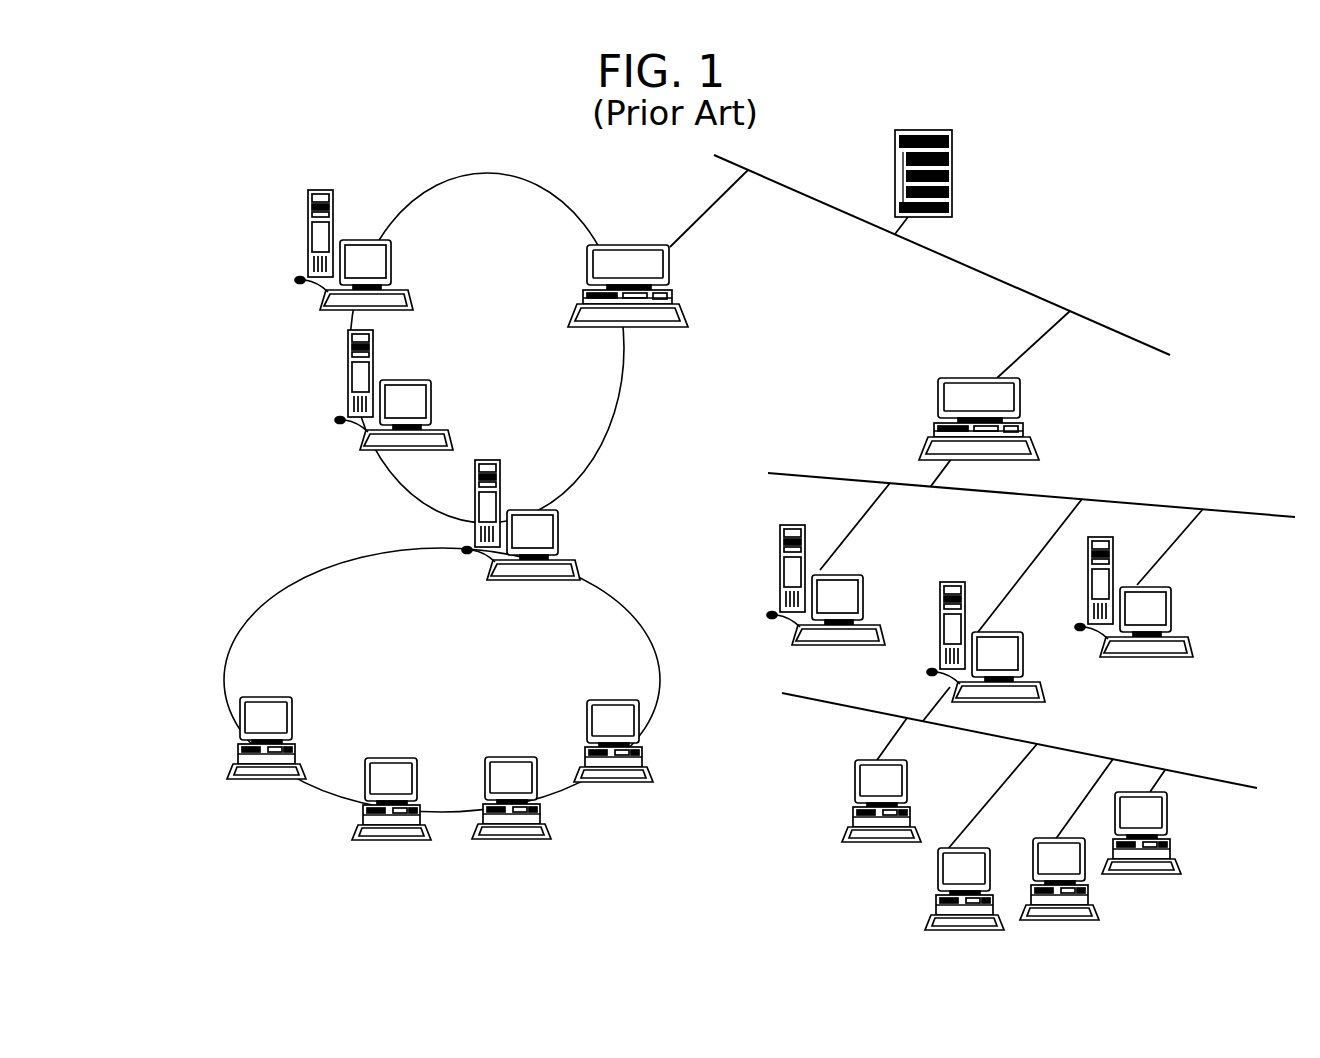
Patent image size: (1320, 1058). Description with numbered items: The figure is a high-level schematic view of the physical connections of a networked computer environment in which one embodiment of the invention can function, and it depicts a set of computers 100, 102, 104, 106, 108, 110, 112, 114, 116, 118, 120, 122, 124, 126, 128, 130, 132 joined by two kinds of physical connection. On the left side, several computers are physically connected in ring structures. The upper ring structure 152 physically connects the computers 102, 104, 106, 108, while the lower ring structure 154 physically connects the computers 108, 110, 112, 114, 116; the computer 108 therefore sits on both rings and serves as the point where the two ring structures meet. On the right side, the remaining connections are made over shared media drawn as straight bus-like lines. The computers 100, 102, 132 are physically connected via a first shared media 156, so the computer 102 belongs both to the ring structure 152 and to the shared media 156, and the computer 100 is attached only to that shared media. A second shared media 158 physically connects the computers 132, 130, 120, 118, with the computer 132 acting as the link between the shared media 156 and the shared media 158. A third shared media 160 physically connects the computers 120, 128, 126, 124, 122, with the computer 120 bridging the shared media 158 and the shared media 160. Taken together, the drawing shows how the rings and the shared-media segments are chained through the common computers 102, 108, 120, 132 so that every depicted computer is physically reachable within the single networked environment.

The computer 100 is at (952, 165).
The computer 102 is at (670, 262).
The computer 104 is at (305, 232).
The computer 106 is at (348, 380).
The computer 108 is at (560, 540).
The computer 110 is at (268, 779).
The computer 112 is at (395, 842).
The computer 114 is at (522, 838).
The computer 116 is at (603, 782).
The computer 118 is at (780, 572).
The computer 120 is at (940, 608).
The computer 122 is at (852, 795).
The computer 124 is at (938, 860).
The computer 126 is at (1082, 878).
The computer 128 is at (1165, 830).
The computer 130 is at (1172, 610).
The computer 132 is at (935, 400).
The ring structure 152 is at (490, 173).
The ring structure 154 is at (358, 557).
The shared media 156 is at (942, 255).
The shared media 158 is at (1132, 500).
The shared media 160 is at (1078, 752).